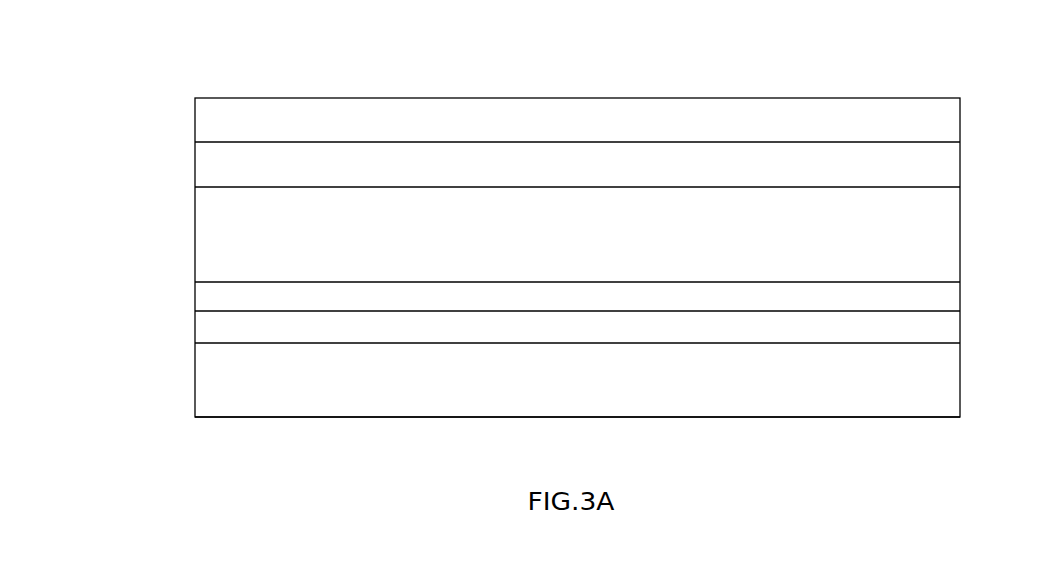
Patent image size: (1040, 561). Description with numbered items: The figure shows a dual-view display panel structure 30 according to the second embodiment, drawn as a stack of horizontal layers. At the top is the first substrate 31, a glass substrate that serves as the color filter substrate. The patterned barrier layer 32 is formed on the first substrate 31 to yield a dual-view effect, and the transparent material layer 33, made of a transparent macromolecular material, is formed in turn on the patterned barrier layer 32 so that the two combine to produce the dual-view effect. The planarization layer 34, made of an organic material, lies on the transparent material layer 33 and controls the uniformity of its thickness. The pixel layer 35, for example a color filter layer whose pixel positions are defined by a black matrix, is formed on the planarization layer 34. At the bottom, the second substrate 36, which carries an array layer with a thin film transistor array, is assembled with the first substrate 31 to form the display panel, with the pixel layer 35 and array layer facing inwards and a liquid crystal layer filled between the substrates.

The dual-view display panel structure 30 is at (573, 217).
The first substrate 31 is at (195, 107).
The patterned barrier layer 32 is at (195, 162).
The transparent material layer 33 is at (195, 245).
The planarization layer 34 is at (195, 298).
The pixel layer 35 is at (195, 334).
The second substrate 36 is at (195, 381).